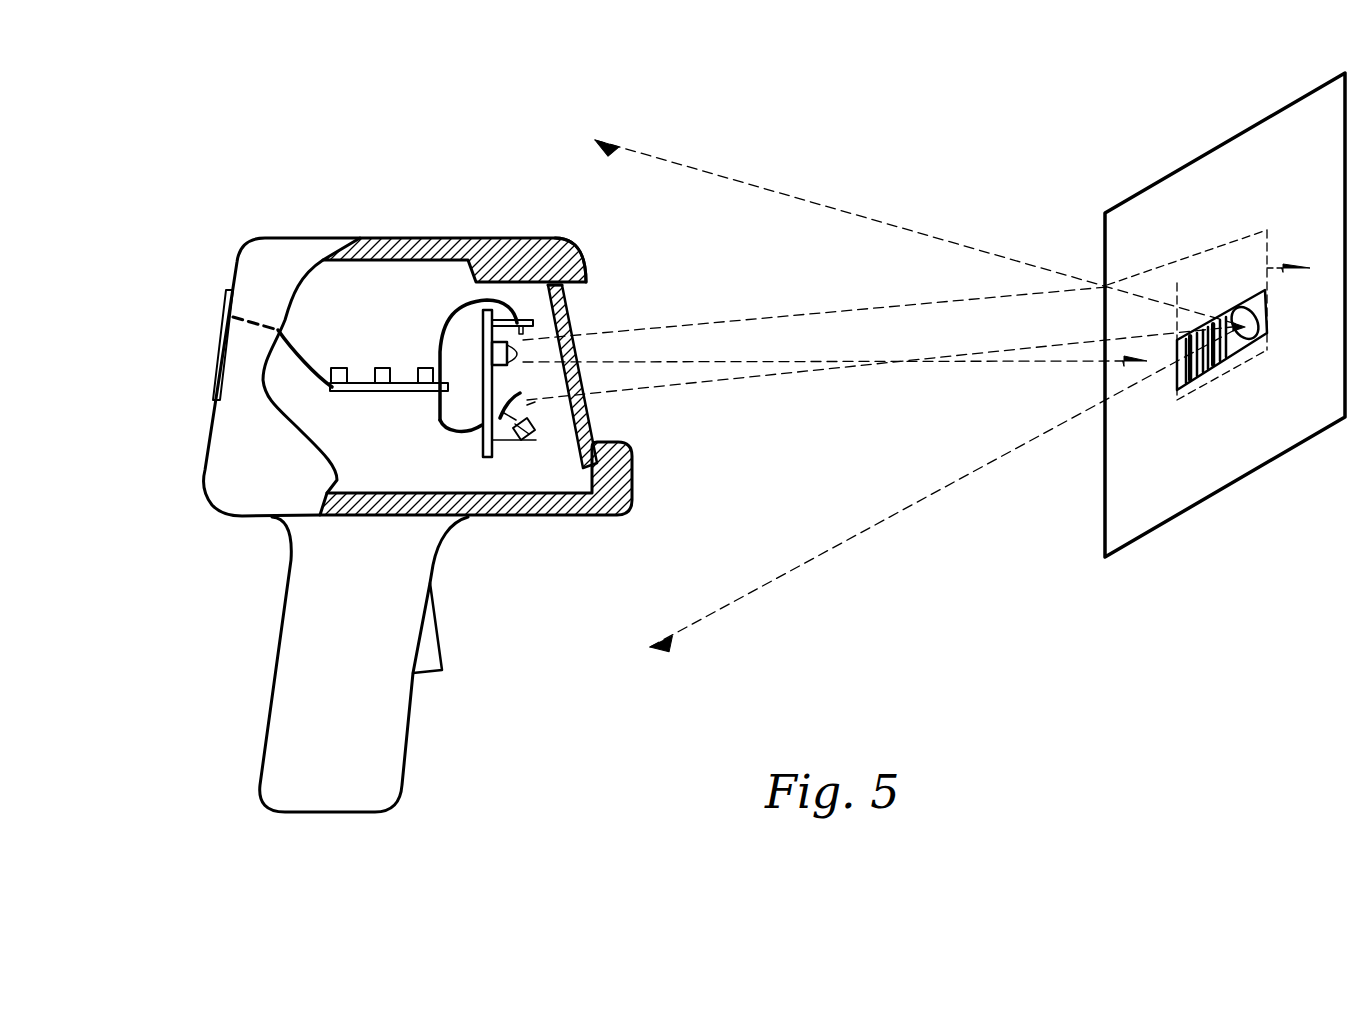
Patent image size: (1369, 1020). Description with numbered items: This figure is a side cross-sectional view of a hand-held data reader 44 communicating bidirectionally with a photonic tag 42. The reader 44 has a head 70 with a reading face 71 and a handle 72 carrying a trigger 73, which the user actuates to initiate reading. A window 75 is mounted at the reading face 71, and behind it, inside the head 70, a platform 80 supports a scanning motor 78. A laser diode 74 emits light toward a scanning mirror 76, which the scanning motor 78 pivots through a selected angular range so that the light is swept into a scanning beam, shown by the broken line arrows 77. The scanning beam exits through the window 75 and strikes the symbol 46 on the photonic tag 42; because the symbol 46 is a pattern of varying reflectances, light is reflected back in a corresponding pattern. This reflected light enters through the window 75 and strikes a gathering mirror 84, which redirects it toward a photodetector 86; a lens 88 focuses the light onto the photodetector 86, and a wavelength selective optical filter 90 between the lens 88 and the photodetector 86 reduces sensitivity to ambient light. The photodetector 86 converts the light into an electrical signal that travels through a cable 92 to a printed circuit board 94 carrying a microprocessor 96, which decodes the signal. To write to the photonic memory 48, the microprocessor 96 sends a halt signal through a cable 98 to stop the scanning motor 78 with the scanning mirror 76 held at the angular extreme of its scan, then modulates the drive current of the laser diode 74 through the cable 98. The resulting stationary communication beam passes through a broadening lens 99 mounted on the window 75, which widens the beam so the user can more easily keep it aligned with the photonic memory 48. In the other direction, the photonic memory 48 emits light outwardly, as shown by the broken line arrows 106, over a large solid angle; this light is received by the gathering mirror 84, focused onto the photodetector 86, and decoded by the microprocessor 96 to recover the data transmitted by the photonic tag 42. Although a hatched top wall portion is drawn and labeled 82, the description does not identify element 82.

The photonic tag 42 is at (1233, 357).
The reader 44 is at (202, 382).
The symbol 46 is at (1205, 325).
The photonic memory 48 is at (1267, 265).
The head 70 is at (258, 240).
The reading face 71 is at (612, 315).
The handle 72 is at (290, 658).
The trigger 73 is at (443, 644).
The laser diode 74 is at (577, 301).
The window 75 is at (582, 275).
The scanning mirror 76 is at (574, 366).
The scanning beam arrows 77 is at (1020, 294).
The scanning motor 78 is at (472, 306).
The platform 80 is at (482, 458).
The top wall section 82 is at (539, 258).
The gathering mirror 84 is at (483, 427).
The photodetector 86 is at (514, 430).
The lens 88 is at (510, 440).
The wavelength selective optical filter 90 is at (530, 402).
The cable 92 is at (440, 415).
The printed circuit board 94 is at (343, 393).
The microprocessor 96 is at (383, 372).
The cable 98 is at (490, 322).
The broadening lens 99 is at (620, 322).
The emitted light arrows 106 is at (703, 172).